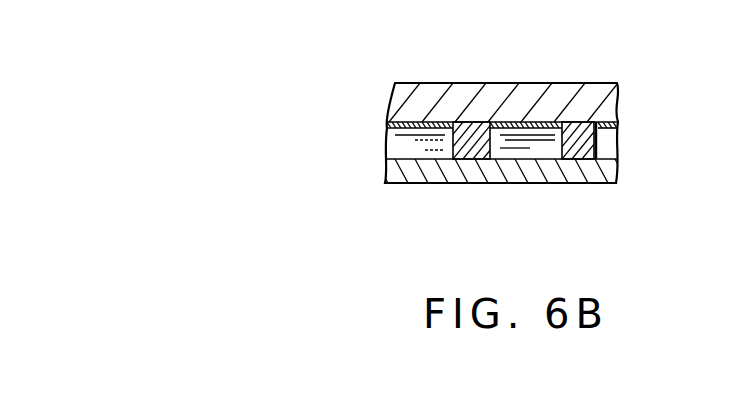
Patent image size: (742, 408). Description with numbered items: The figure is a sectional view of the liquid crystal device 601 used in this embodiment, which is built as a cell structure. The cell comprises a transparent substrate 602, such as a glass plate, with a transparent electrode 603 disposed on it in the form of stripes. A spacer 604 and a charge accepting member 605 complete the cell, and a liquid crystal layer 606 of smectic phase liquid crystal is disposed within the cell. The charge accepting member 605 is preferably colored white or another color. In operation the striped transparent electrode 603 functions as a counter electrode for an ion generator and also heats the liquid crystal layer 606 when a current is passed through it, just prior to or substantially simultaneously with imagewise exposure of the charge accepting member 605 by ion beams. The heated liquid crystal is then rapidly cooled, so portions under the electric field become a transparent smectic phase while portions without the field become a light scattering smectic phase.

The thermal head assembly 601 is at (578, 38).
The transparent substrate 602 is at (436, 92).
The transparent electrode 603 is at (386, 125).
The spacer 604 is at (619, 139).
The charge accepting member 605 is at (420, 180).
The liquid crystal layer 606 is at (552, 153).